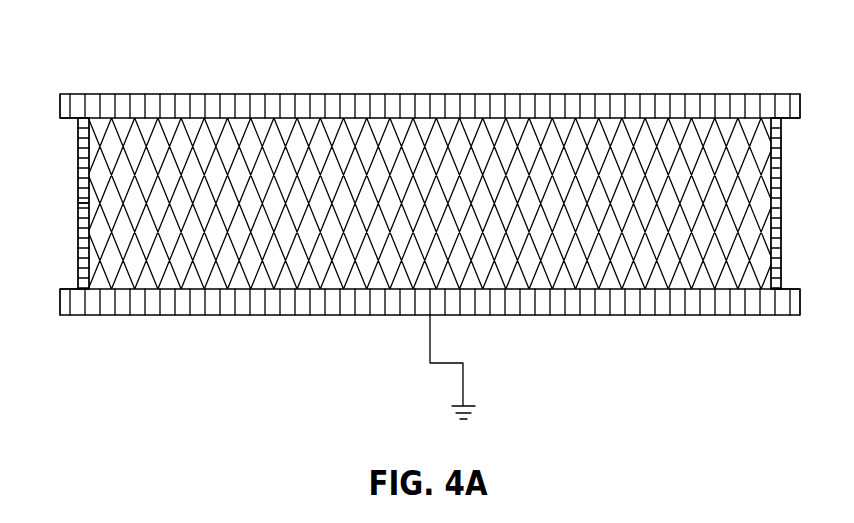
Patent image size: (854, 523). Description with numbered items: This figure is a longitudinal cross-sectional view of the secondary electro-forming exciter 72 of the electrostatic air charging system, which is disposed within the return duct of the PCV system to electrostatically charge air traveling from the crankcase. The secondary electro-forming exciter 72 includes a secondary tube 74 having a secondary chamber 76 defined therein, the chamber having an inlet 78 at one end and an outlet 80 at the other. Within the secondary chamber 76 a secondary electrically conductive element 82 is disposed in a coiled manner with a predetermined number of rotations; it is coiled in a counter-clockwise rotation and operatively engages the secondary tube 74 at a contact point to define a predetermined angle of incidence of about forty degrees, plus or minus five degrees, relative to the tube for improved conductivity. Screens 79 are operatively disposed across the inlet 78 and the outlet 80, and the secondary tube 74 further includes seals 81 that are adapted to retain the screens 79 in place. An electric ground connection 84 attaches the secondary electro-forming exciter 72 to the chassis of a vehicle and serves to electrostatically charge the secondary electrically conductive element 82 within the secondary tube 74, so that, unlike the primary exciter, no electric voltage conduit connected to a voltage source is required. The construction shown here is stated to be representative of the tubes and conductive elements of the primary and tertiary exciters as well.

The secondary electro-forming exciter 72 is at (429, 192).
The secondary tube 74 is at (387, 93).
The secondary chamber 76 is at (62, 160).
The inlet 78 is at (60, 249).
The screens 79 is at (78, 195).
The outlet 80 is at (802, 251).
The seals 81 is at (76, 122).
The secondary electrically conductive element 82 is at (522, 150).
The electric ground connection 84 is at (430, 338).